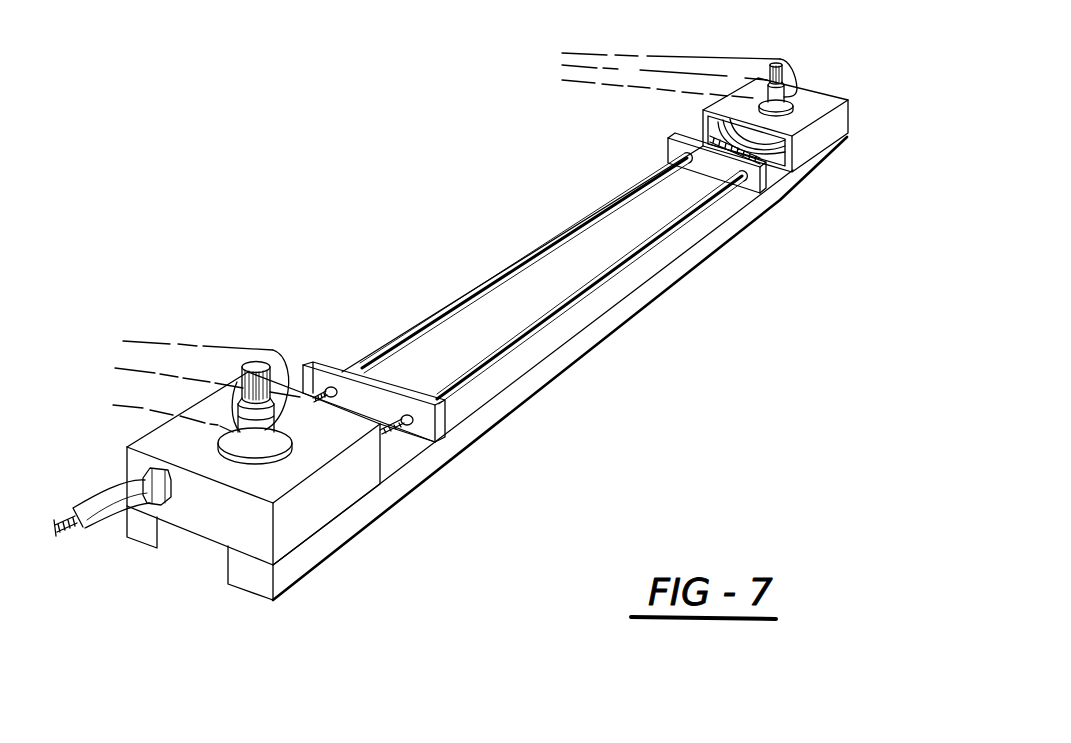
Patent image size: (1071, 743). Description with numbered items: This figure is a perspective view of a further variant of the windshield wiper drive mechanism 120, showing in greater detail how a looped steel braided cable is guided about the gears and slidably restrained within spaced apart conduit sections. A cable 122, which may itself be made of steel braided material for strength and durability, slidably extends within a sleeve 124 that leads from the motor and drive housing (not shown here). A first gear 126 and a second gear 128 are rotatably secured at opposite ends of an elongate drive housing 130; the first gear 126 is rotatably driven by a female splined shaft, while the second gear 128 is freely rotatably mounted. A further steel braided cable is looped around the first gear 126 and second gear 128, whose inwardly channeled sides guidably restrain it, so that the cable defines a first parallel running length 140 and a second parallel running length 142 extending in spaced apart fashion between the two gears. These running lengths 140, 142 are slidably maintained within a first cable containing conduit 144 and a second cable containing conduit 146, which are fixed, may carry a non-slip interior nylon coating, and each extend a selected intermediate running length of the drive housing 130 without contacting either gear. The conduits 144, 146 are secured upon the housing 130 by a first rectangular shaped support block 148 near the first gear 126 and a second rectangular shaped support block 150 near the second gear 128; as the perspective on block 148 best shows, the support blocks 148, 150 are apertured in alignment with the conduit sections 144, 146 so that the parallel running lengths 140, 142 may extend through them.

The drive mechanism 120 is at (436, 247).
The cable 122 is at (75, 530).
The sleeve 124 is at (107, 498).
The first gear 126 is at (322, 504).
The second gear 128 is at (703, 112).
The elongate drive housing 130 is at (453, 442).
The first parallel running length 140 is at (282, 372).
The second parallel running length 142 is at (398, 440).
The first cable containing conduit 144 is at (537, 258).
The second cable containing conduit 146 is at (518, 340).
The first rectangular shaped support block 148 is at (332, 365).
The second rectangular shaped support block 150 is at (752, 183).